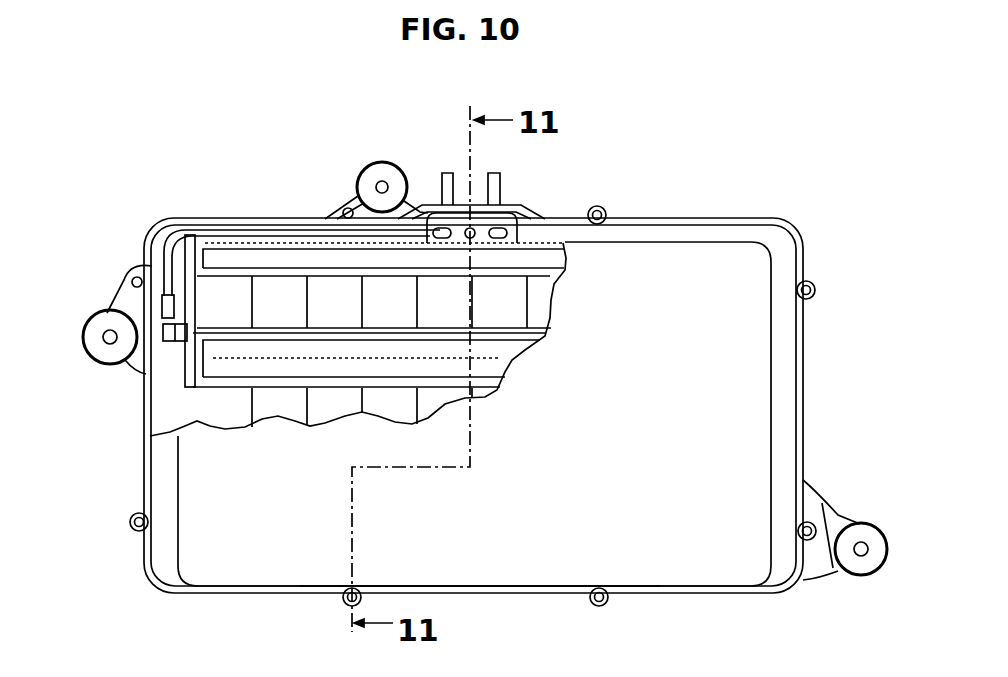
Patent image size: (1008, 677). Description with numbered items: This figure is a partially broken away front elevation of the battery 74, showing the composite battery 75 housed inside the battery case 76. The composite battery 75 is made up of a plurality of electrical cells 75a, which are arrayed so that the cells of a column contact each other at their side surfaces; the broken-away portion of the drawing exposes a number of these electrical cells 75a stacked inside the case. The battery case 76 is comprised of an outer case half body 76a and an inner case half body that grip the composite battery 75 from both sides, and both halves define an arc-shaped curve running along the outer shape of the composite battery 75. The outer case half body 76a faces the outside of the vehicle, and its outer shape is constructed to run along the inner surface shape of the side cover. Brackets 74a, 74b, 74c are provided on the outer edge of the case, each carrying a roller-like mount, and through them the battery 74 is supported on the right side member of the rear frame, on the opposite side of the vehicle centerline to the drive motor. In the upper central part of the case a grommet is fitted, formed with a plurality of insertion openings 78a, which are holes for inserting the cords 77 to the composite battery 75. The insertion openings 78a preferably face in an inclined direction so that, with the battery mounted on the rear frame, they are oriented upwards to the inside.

The battery 74 is at (747, 217).
The bracket 74a is at (873, 525).
The bracket 74b is at (356, 181).
The bracket 74c is at (96, 313).
The composite battery 75 is at (190, 407).
The electrical cell 75a is at (213, 293).
The battery case 76 is at (805, 355).
The outer case half body 76a is at (683, 543).
The cord 77 is at (182, 233).
The insertion opening 78a is at (512, 204).